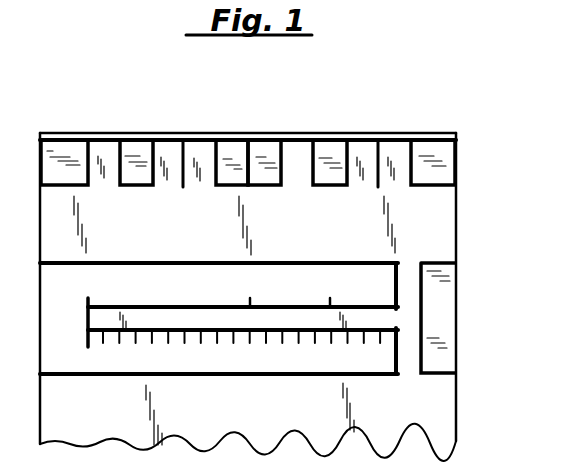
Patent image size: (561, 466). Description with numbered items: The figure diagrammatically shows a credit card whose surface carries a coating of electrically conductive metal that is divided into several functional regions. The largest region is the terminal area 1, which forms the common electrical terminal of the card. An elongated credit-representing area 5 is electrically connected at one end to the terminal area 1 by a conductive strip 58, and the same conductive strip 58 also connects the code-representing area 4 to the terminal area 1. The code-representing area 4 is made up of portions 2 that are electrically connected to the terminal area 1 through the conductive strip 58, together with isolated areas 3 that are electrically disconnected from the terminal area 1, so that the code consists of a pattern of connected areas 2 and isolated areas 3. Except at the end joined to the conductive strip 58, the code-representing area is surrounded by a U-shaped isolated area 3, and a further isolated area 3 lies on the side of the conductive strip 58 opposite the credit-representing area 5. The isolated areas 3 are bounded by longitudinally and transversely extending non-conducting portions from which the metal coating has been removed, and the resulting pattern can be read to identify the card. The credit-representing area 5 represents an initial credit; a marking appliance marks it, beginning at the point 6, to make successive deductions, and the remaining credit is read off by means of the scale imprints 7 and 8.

The terminal area 1 is at (432, 410).
The connected portions 2 is at (101, 146).
The isolated areas 3 is at (58, 146).
The code-representing area 4 is at (430, 146).
The credit-representing area 5 is at (272, 322).
The marking start 6 is at (130, 340).
The scale imprint 7 is at (170, 305).
The scale imprint 8 is at (248, 340).
The conductive strip 58 is at (408, 322).